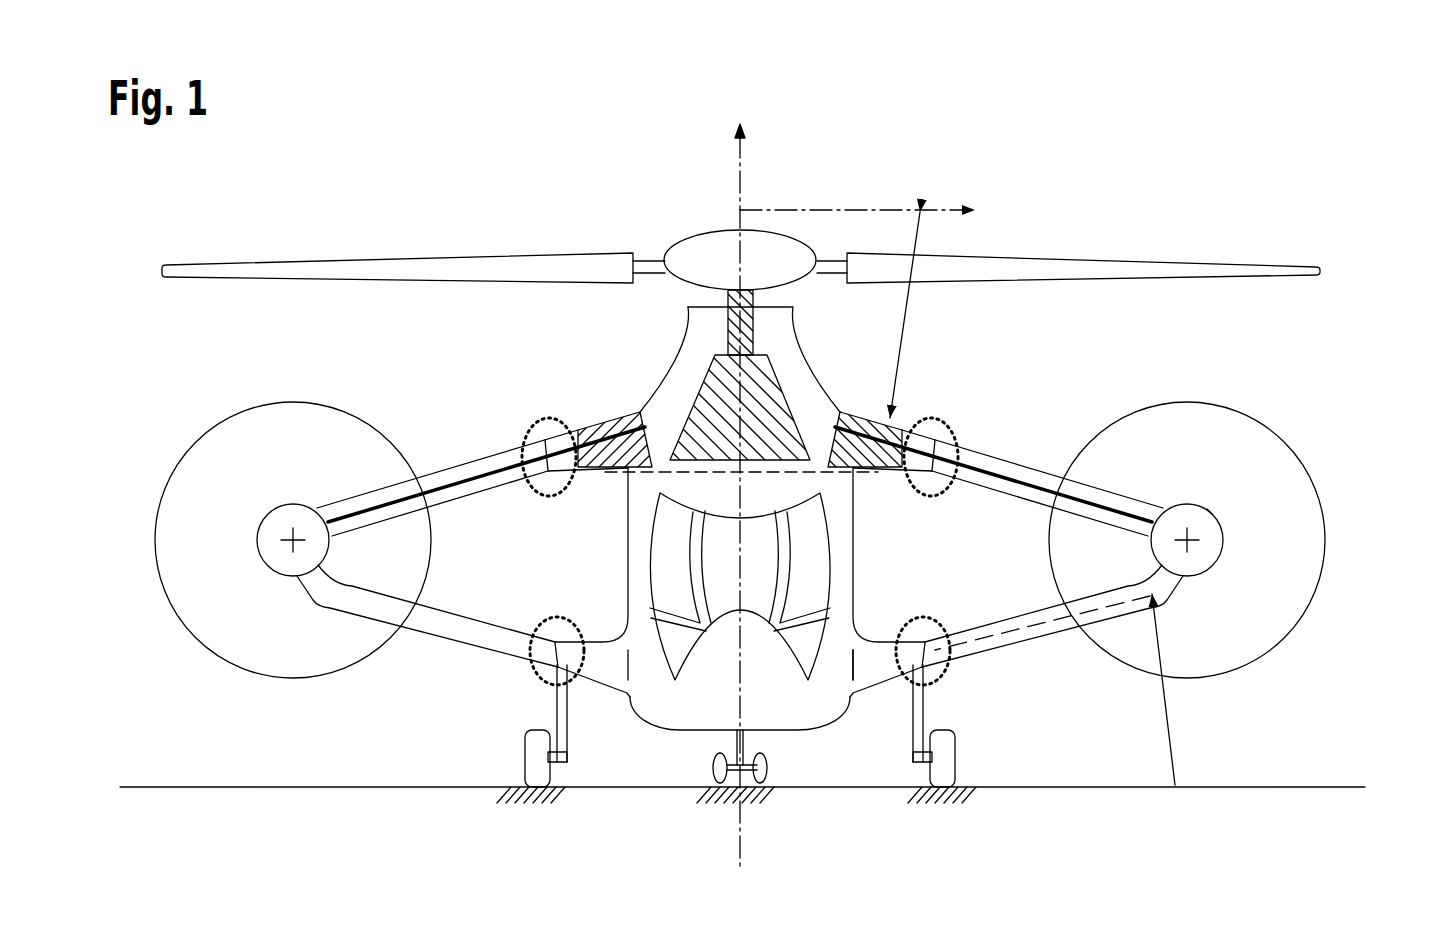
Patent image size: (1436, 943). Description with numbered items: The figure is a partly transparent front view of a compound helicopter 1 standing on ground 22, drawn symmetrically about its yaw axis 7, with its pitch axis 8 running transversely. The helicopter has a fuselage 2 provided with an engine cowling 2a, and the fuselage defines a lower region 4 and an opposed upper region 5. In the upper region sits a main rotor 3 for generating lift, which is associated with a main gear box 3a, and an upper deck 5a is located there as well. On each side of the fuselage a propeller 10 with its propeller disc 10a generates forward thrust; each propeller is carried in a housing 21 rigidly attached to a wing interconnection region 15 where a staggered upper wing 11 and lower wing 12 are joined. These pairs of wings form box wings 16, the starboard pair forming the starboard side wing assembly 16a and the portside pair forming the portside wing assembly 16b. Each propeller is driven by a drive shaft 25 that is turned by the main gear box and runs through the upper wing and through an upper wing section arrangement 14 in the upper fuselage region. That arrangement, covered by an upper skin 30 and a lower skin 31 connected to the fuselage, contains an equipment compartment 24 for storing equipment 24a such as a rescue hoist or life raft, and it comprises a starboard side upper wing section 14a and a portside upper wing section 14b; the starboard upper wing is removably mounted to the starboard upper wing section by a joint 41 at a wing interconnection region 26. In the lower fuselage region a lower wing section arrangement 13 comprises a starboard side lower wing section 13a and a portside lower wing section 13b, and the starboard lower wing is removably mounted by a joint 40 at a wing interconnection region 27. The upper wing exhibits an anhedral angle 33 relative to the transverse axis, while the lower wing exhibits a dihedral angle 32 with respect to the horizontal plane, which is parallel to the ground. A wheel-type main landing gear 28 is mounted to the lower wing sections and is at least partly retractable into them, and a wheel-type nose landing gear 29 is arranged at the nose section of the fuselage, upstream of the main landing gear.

The compound helicopter 1 is at (331, 218).
The fuselage 2 is at (627, 525).
The engine cowling 2a is at (809, 342).
The main rotor 3 is at (1158, 256).
The main gear box 3a is at (762, 391).
The lower region 4 is at (798, 744).
The upper region 5 is at (687, 352).
The upper deck 5a is at (662, 466).
The yaw axis 7 is at (746, 170).
The pitch axis 8 is at (904, 201).
The propeller 10 is at (1315, 482).
The propeller disc 10a is at (1250, 533).
The upper wing 11 is at (1023, 465).
The lower wing 12 is at (1015, 645).
The lower wing section arrangement 13 is at (875, 692).
The starboard side lower wing section 13a is at (886, 675).
The portside lower wing section 13b is at (588, 691).
The upper wing section arrangement 14 is at (905, 483).
The starboard side upper wing section 14a is at (906, 417).
The portside upper wing section 14b is at (560, 424).
The wing interconnection region 15 is at (1225, 568).
The box wings 16 is at (455, 669).
The starboard side wing assembly 16a is at (420, 637).
The portside wing assembly 16b is at (1072, 642).
The housing 21 is at (1207, 509).
The ground 22 is at (578, 792).
The equipment compartment 24 is at (869, 453).
The equipment 24a is at (835, 416).
The drive shaft 25 is at (1033, 458).
The wing interconnection region 26 is at (957, 418).
The wing interconnection region 27 is at (942, 609).
The wheel-type main landing gear 28 is at (572, 731).
The wheel-type nose landing gear 29 is at (746, 745).
The upper skin 30 is at (897, 418).
The lower skin 31 is at (867, 474).
The dihedral angle 32 is at (1185, 772).
The anhedral angle 33 is at (925, 238).
The joint 40 is at (949, 658).
The joint 41 is at (968, 450).